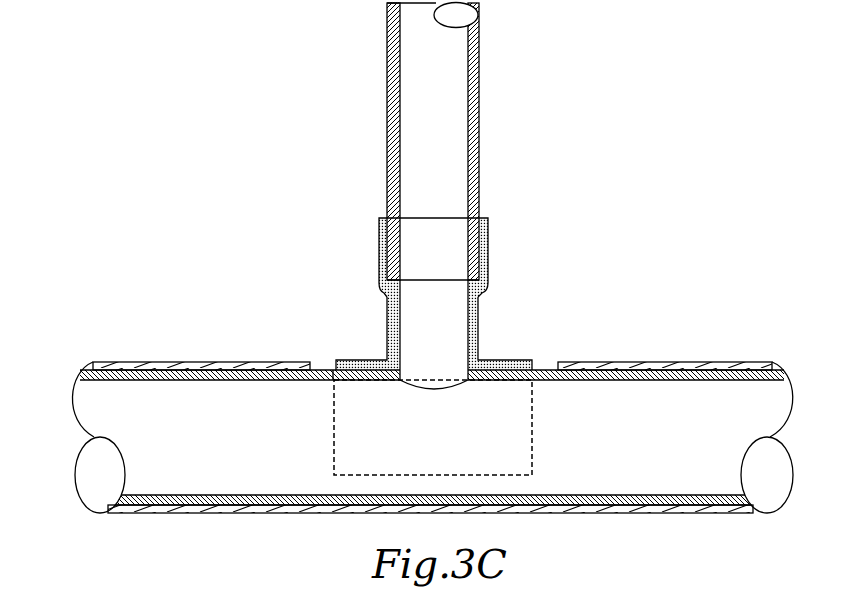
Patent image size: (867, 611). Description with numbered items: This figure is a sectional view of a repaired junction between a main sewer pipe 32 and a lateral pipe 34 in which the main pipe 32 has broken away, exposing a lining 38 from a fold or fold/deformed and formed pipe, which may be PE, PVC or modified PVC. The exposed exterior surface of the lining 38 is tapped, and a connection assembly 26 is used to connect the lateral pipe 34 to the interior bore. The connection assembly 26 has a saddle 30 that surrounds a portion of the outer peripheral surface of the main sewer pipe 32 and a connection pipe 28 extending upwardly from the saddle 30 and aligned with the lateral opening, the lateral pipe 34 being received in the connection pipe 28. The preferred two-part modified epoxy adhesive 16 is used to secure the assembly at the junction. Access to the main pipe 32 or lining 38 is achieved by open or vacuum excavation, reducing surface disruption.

The two-part modified epoxy adhesive 16 is at (334, 428).
The connection assembly 26 is at (330, 281).
The connection pipe 28 is at (487, 241).
The saddle 30 is at (498, 395).
The main pipe 32 is at (165, 362).
The lateral pipe 34 is at (399, 101).
The lining 38 is at (318, 371).